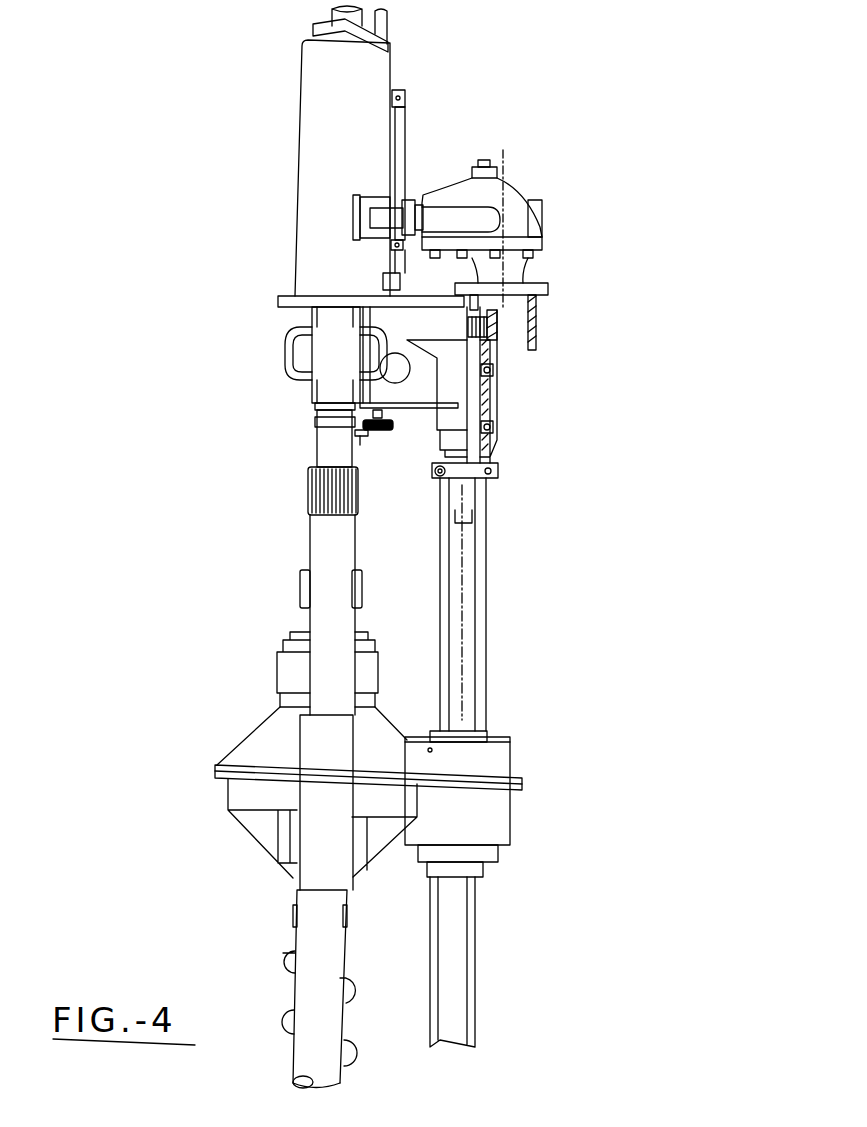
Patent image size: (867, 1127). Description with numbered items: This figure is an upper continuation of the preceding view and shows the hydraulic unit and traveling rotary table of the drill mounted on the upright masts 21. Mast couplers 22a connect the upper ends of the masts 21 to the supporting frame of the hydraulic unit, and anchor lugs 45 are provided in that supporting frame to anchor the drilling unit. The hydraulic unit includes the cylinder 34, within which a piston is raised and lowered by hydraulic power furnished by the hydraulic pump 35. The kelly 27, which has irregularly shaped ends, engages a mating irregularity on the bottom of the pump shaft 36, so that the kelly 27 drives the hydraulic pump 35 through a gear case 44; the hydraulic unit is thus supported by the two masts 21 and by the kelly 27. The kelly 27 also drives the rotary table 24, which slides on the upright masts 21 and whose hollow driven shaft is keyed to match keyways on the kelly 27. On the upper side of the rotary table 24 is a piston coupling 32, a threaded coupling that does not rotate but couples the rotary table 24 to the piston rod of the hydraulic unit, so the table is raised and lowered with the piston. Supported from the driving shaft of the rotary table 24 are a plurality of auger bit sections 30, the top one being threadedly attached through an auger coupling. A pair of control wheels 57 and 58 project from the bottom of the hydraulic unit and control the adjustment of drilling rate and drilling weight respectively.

The cylinder 34 is at (302, 128).
The hydraulic pump 35 is at (534, 195).
The gear case 44 is at (535, 332).
The anchor lugs 45 is at (288, 370).
The mast couplers 22a is at (308, 490).
The control wheel 58 is at (385, 428).
The control wheel 57 is at (362, 436).
The pump shaft 36 is at (498, 471).
The kelly 27 is at (487, 603).
The piston coupling 32 is at (363, 588).
The rotary table 24 is at (262, 727).
The upright masts 21 is at (338, 950).
The auger bit sections 30 is at (288, 1020).